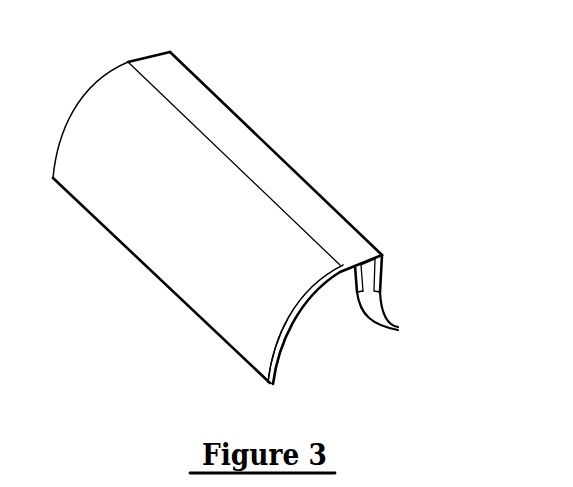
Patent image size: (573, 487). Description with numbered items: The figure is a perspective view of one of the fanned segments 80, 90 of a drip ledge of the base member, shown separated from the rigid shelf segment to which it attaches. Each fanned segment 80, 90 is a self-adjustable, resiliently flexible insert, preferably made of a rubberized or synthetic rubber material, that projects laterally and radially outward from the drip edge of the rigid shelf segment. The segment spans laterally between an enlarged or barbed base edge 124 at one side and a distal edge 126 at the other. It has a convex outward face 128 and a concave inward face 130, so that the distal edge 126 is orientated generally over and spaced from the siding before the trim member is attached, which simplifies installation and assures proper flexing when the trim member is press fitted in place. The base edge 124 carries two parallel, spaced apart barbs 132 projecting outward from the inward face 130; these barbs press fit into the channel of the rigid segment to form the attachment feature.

The fanned segment 80 is at (283, 218).
The fanned segment 90 is at (328, 134).
The base edge 124 is at (382, 268).
The distal edge 126 is at (183, 304).
The outward face 128 is at (105, 116).
The inward face 130 is at (293, 327).
The barbs 132 is at (400, 330).